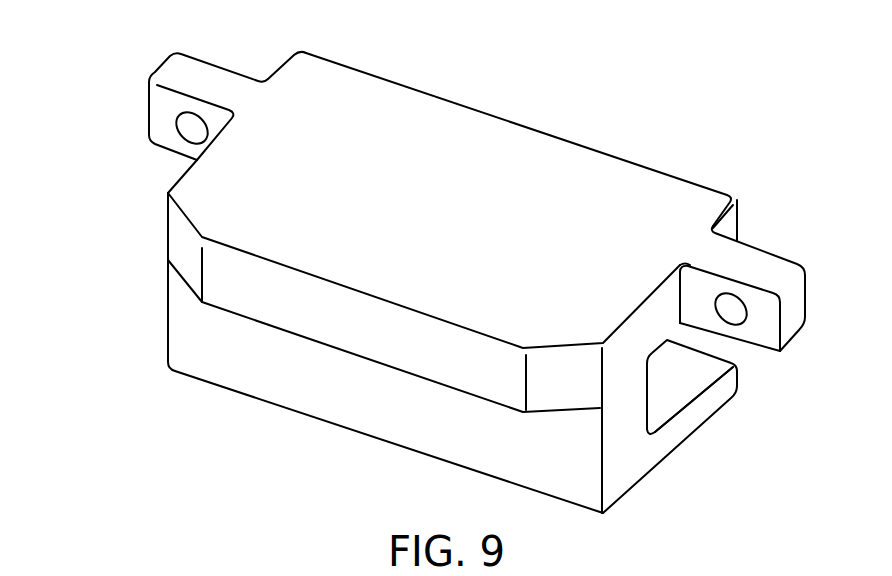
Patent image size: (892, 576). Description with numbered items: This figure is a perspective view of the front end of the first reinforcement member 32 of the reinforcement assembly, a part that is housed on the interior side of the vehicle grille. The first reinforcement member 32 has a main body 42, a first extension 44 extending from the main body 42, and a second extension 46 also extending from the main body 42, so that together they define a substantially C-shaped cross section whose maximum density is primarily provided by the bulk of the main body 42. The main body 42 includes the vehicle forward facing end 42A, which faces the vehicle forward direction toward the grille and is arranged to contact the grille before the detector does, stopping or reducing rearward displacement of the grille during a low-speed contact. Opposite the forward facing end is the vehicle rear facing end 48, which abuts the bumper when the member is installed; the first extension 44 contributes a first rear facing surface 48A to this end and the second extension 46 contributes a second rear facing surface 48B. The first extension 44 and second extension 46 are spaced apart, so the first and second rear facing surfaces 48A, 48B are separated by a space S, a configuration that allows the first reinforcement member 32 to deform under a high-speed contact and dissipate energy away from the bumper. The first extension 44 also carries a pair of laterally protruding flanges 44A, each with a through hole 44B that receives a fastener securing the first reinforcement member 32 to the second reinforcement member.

The first reinforcement member 32 is at (572, 52).
The main body 42 is at (335, 230).
The vehicle forward facing end 42A is at (278, 298).
The first extension 44 is at (651, 322).
The laterally protruding flange 44A is at (188, 75).
The through hole 44B is at (192, 130).
The second extension 46 is at (98, 96).
The vehicle rear facing end 48 is at (755, 388).
The first rear facing surface 48A is at (728, 228).
The second rear facing surface 48B is at (738, 378).
The space S is at (680, 383).